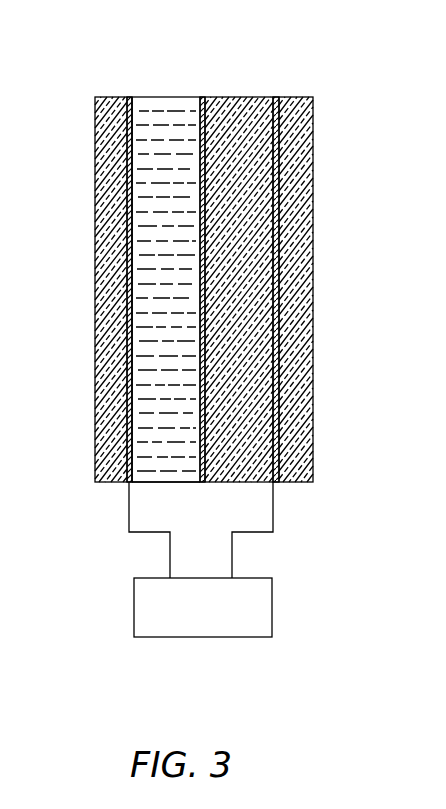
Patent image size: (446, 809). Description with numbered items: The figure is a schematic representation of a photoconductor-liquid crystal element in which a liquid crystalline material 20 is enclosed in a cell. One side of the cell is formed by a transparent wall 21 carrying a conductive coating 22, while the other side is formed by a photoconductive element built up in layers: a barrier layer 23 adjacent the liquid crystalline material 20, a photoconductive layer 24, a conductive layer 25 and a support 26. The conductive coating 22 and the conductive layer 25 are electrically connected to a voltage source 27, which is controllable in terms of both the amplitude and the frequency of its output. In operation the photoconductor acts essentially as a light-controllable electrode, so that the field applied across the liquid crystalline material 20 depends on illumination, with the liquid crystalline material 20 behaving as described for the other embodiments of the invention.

The liquid crystalline material 20 is at (172, 463).
The transparent wall 21 is at (108, 412).
The conductive coating 22 is at (131, 99).
The barrier layer 23 is at (200, 245).
The photoconductive layer 24 is at (234, 115).
The conductive layer 25 is at (276, 141).
The support 26 is at (293, 318).
The voltage source 27 is at (272, 583).